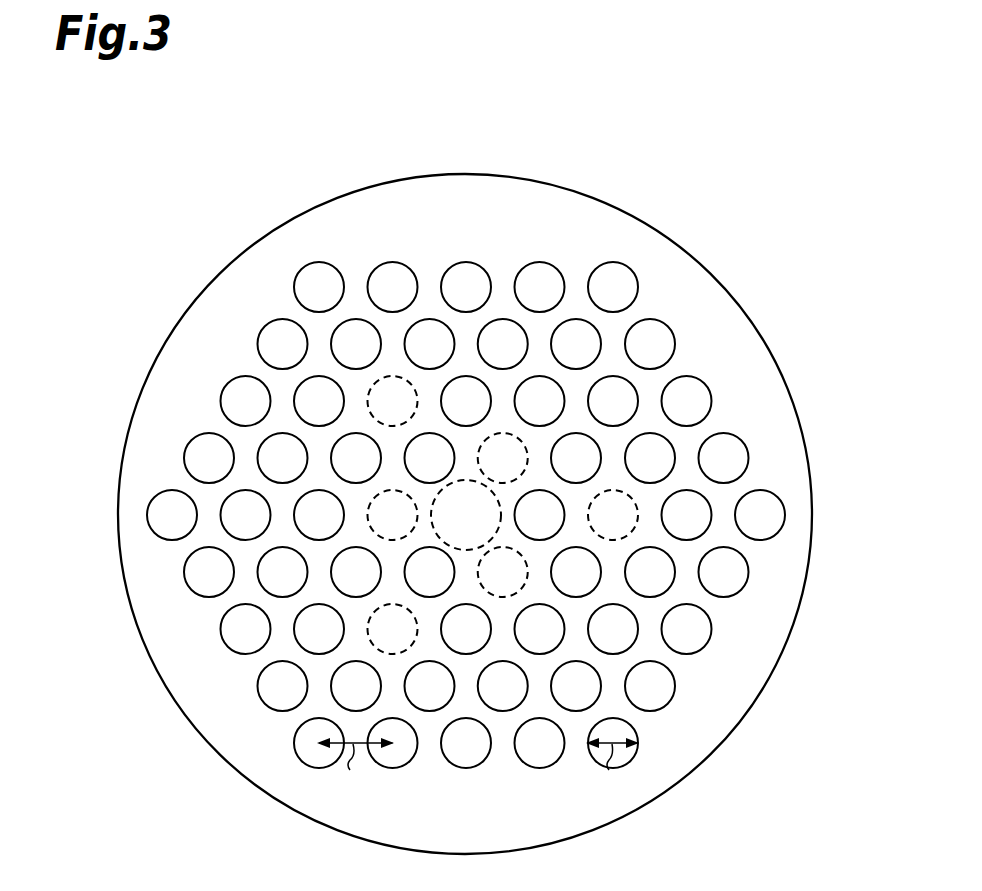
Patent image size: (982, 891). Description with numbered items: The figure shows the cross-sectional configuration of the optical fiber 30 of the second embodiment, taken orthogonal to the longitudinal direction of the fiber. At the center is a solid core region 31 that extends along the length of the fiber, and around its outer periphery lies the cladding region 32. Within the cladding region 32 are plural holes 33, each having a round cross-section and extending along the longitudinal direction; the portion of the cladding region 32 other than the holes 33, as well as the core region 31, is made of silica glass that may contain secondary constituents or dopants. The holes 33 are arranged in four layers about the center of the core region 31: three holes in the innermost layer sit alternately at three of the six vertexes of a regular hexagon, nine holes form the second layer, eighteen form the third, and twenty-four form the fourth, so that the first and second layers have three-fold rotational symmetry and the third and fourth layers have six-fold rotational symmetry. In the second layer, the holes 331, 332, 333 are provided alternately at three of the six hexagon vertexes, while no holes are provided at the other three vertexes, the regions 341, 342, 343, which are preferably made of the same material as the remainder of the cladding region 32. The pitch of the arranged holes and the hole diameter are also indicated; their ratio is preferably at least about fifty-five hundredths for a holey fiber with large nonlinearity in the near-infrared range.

The optical fiber 30 is at (733, 210).
The core region 31 is at (623, 414).
The cladding region 32 is at (807, 443).
The holes 33 is at (733, 582).
The hole 331 is at (307, 508).
The hole 332 is at (555, 625).
The hole 333 is at (548, 388).
The region 341 is at (380, 630).
The region 342 is at (630, 510).
The region 343 is at (390, 390).